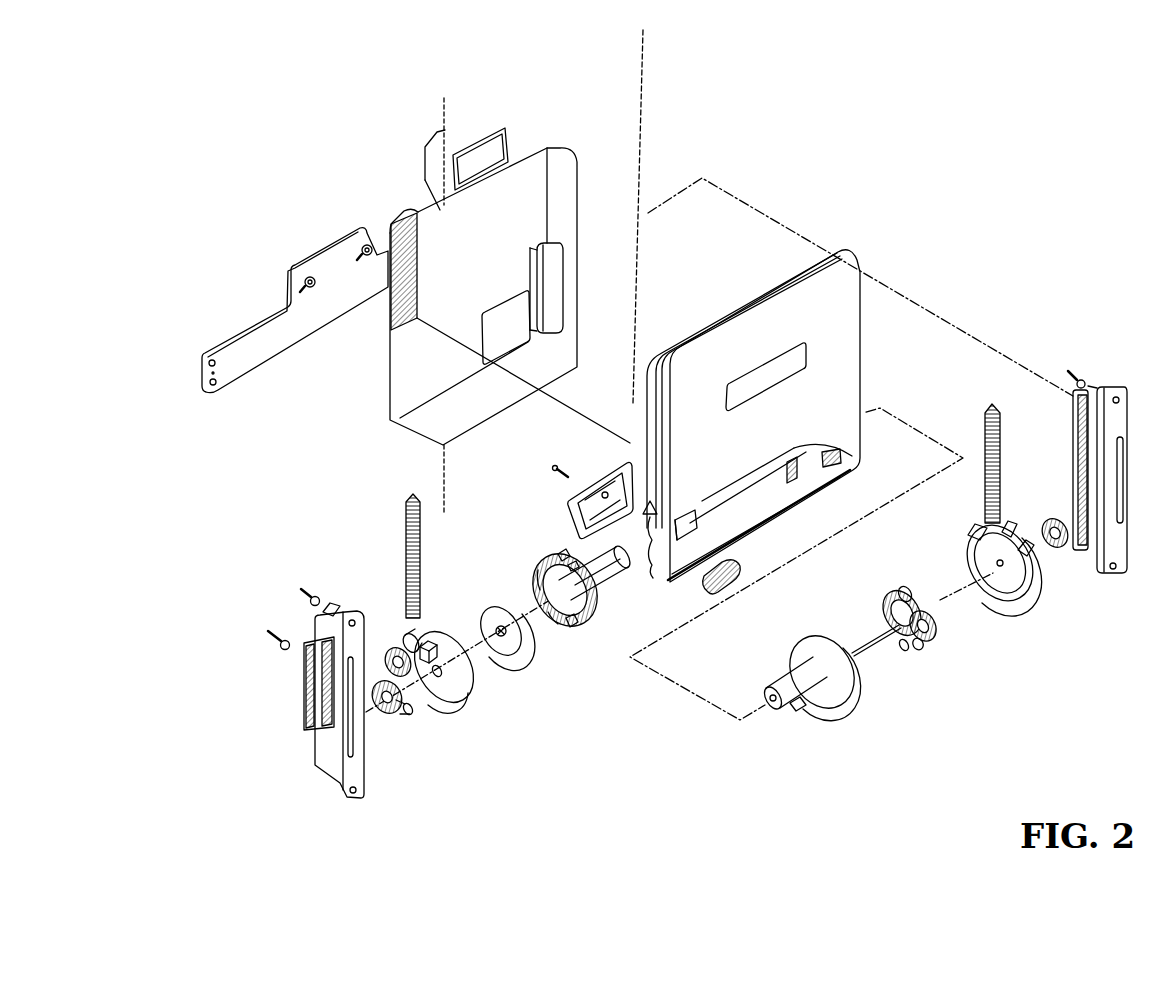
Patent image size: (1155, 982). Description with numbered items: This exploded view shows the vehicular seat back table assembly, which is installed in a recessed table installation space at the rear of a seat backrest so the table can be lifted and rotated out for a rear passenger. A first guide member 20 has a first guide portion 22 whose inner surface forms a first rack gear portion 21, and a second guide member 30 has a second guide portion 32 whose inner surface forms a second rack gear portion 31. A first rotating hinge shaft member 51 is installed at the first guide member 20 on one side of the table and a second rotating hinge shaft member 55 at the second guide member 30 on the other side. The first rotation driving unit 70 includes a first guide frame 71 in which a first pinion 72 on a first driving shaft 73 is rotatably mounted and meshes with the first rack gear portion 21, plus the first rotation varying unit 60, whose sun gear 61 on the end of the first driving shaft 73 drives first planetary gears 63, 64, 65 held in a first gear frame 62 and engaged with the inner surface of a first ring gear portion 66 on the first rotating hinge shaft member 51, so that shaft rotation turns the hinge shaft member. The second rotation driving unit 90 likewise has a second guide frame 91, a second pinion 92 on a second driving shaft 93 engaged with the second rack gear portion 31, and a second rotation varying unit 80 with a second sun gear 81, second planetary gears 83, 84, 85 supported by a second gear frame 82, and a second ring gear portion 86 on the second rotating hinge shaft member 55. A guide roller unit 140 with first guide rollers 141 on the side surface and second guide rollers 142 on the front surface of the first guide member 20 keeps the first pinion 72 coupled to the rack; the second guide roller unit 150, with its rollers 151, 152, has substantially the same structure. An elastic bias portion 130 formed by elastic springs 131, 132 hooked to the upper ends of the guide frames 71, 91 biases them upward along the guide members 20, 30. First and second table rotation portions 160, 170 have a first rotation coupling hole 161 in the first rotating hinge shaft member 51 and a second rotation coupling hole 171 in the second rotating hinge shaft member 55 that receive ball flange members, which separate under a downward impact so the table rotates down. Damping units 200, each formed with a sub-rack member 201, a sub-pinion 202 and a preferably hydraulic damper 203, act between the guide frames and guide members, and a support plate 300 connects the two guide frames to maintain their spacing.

The first guide member 20 is at (293, 674).
The first rack gear portion 21 is at (330, 683).
The first guide portion 22 is at (328, 610).
The second guide member 30 is at (1077, 473).
The second rack gear portion 31 is at (1077, 420).
The second guide portion 32 is at (1080, 382).
The first rotating hinge shaft member 51 is at (595, 507).
The second rotating hinge shaft member 55 is at (807, 688).
The first rotation varying unit 60 is at (562, 629).
The sun gear 61 is at (570, 625).
The first gear frame 62 is at (510, 658).
The first planetary gear 63 is at (562, 558).
The first planetary gear 64 is at (573, 630).
The first planetary gear 65 is at (540, 573).
The first ring gear portion 66 is at (570, 568).
The first rotation driving unit 70 is at (388, 636).
The first guide frame 71 is at (452, 648).
The first pinion 72 is at (387, 713).
The first driving shaft 73 is at (552, 623).
The second rotation varying unit 80 is at (937, 635).
The second sun gear 81 is at (921, 650).
The second gear frame 82 is at (913, 592).
The second planetary gear 83 is at (885, 605).
The second planetary gear 84 is at (940, 640).
The second planetary gear 85 is at (904, 652).
The second ring gear portion 86 is at (840, 687).
The second rotation driving unit 90 is at (1000, 483).
The second guide frame 91 is at (987, 527).
The second pinion 92 is at (1057, 550).
The second driving shaft 93 is at (880, 643).
The elastic bias portion 130 is at (381, 532).
The elastic spring 131 is at (407, 545).
The elastic spring 132 is at (1007, 420).
The guide roller unit 140 is at (460, 608).
The first guide rollers 141 is at (430, 642).
The second guide rollers 142 is at (440, 666).
The second guide roller unit 150 is at (1036, 499).
The coupling tab 151 is at (1010, 520).
The coupling tab 152 is at (1027, 543).
The first table rotation portion 160 is at (737, 461).
The first rotation coupling hole 161 is at (614, 577).
The second table rotation portion 170 is at (830, 478).
The second rotation coupling hole 171 is at (793, 700).
The damping unit 200 is at (385, 638).
The sub-rack member 201 is at (305, 672).
The sub-pinion 202 is at (410, 712).
The damper 203 is at (400, 645).
The support plate 300 is at (230, 340).